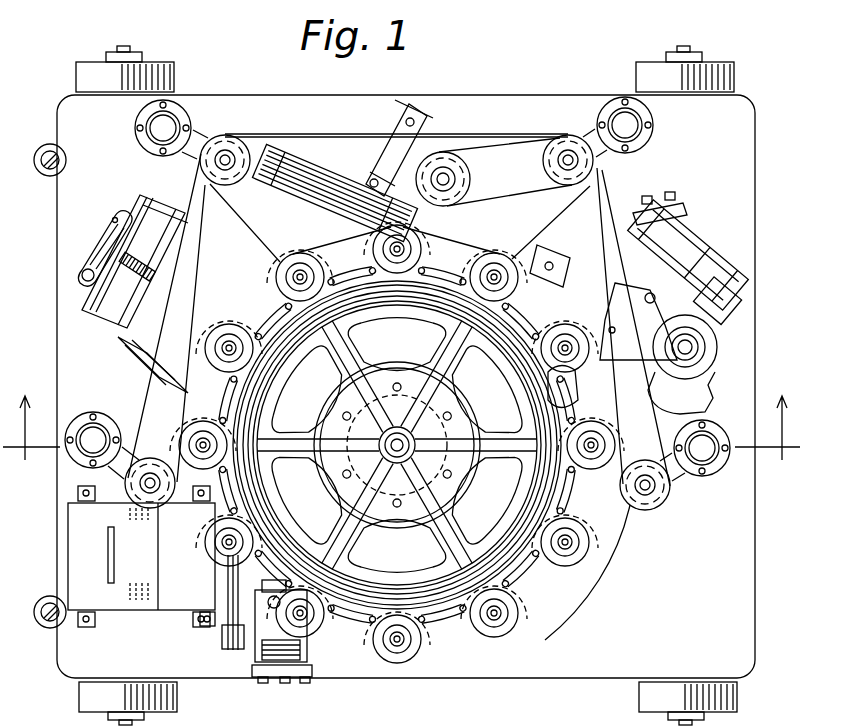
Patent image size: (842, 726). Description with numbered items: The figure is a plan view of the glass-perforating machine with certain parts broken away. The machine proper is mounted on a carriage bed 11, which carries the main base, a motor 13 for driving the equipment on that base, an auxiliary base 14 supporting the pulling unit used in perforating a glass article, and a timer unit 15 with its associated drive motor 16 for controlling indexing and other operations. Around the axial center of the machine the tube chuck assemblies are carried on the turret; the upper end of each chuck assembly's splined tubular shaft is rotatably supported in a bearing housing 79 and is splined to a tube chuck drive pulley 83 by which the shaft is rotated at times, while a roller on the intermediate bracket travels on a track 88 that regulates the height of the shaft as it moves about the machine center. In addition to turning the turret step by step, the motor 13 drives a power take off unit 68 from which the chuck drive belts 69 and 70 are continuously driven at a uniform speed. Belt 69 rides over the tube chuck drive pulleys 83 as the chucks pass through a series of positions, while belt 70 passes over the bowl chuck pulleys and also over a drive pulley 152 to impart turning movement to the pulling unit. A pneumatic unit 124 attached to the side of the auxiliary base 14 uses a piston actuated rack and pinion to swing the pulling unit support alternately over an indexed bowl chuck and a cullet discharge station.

The carriage bed 11 is at (206, 665).
The motor 13 is at (148, 352).
The auxiliary base 14 is at (712, 384).
The timer unit 15 is at (80, 558).
The drive motor 16 is at (256, 652).
The power take off unit 68 is at (400, 172).
The chuck drive belt 69 is at (310, 134).
The chuck drive belt 70 is at (590, 212).
The bearing housing 79 is at (572, 386).
The tube chuck drive pulley 83 is at (222, 328).
The track 88 is at (365, 618).
The pneumatic unit 124 is at (710, 292).
The drive pulley 152 is at (616, 282).